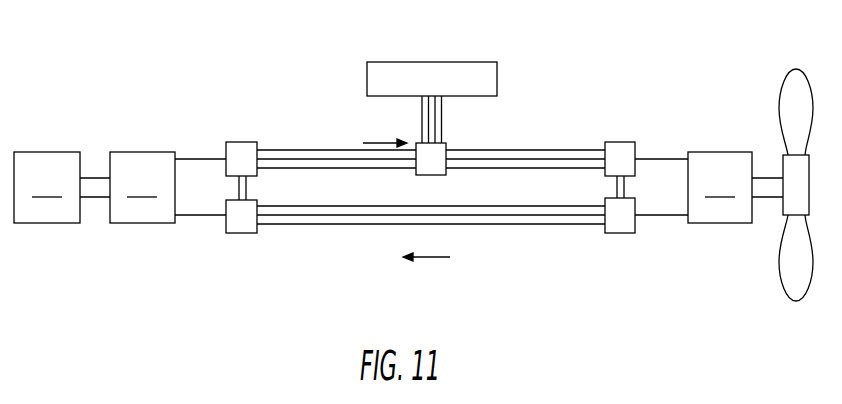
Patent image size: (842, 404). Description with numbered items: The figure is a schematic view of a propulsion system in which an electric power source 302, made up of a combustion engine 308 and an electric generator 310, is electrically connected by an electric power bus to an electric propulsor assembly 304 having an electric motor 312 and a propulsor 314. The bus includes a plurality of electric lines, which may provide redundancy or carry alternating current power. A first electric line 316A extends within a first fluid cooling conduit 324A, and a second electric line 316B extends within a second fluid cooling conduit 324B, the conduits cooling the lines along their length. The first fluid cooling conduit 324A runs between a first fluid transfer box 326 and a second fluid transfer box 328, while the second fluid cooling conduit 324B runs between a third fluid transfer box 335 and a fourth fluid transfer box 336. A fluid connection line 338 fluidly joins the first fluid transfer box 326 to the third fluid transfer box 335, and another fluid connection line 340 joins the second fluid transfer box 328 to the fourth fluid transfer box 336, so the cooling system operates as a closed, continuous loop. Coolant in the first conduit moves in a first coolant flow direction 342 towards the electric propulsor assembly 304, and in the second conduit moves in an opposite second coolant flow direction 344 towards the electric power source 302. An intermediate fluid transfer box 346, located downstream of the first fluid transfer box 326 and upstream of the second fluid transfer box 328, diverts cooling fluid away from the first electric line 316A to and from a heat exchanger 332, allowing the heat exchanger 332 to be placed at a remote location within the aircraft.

The electric power source 302 is at (88, 135).
The electric propulsor assembly 304 is at (735, 87).
The combustion engine 308 is at (47, 187).
The electric generator 310 is at (142, 187).
The electric motor 312 is at (720, 187).
The propulsor 314 is at (780, 275).
The first electric line 316A is at (310, 158).
The second electric line 316B is at (308, 217).
The first fluid cooling conduit 324A is at (510, 149).
The second fluid cooling conduit 324B is at (510, 226).
The first fluid transfer box 326 is at (245, 142).
The second fluid transfer box 328 is at (620, 142).
The heat exchanger 332 is at (432, 62).
The third fluid transfer box 335 is at (242, 234).
The fourth fluid transfer box 336 is at (622, 234).
The fluid connection line 338 is at (236, 185).
The fluid connection line 340 is at (626, 186).
The first coolant flow direction 342 is at (377, 140).
The second coolant flow direction 344 is at (432, 257).
The intermediate fluid transfer box 346 is at (447, 142).